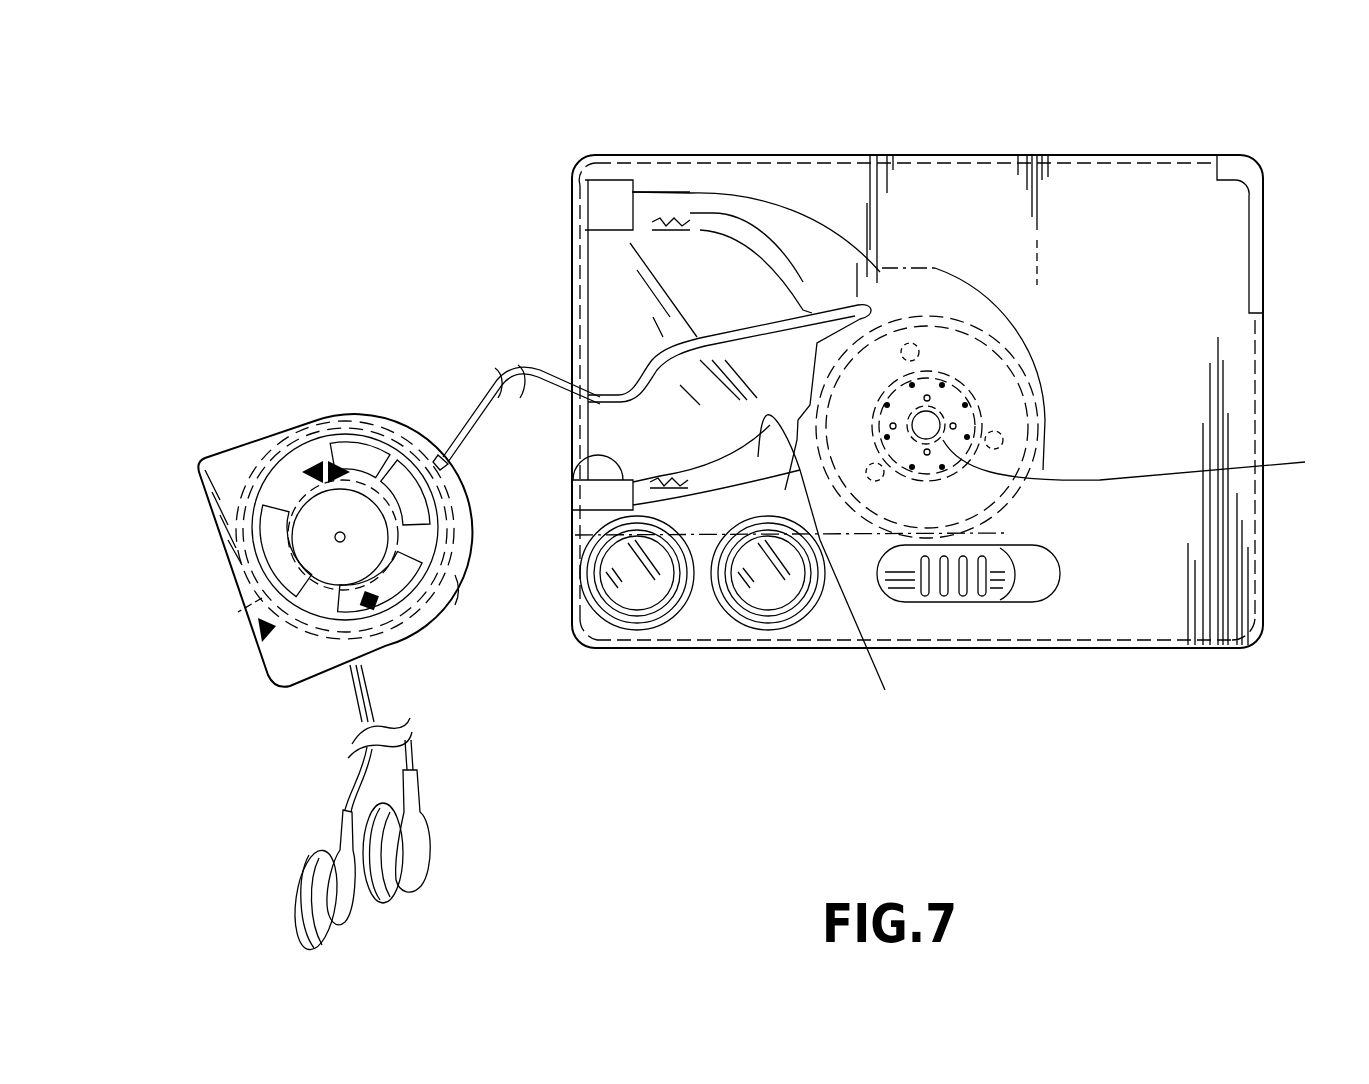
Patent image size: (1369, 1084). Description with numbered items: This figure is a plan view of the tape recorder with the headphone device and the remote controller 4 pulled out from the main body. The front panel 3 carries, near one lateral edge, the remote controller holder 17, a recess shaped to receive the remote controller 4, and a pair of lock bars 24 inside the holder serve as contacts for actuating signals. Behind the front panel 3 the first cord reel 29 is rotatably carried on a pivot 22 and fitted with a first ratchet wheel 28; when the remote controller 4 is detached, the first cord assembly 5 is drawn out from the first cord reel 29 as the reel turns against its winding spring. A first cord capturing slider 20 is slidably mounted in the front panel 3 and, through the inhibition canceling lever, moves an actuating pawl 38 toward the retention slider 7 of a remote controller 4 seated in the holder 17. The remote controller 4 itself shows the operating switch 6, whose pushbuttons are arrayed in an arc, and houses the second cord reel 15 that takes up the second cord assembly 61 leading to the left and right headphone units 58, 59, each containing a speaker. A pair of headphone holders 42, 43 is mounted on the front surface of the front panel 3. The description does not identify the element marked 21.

The front panel 3 is at (1000, 190).
The remote controller 4 is at (245, 447).
The first cord assembly 5 is at (533, 372).
The operating switch 6 is at (364, 465).
The retention slider 7 is at (455, 590).
The second cord reel 15 is at (260, 598).
The remote controller holder 17 is at (578, 455).
The first cord capturing slider 20 is at (997, 596).
The swing arm 21 is at (822, 312).
The pivot 22 is at (1149, 460).
The lock bars 24 is at (690, 220).
The first ratchet wheel 28 is at (993, 350).
The first cord reel 29 is at (1043, 420).
The actuating pawl 38 is at (832, 572).
The headphone holder 42 is at (778, 597).
The headphone holder 43 is at (640, 597).
The left unit 58 is at (350, 905).
The right unit 59 is at (425, 855).
The second cord assembly 61 is at (350, 710).